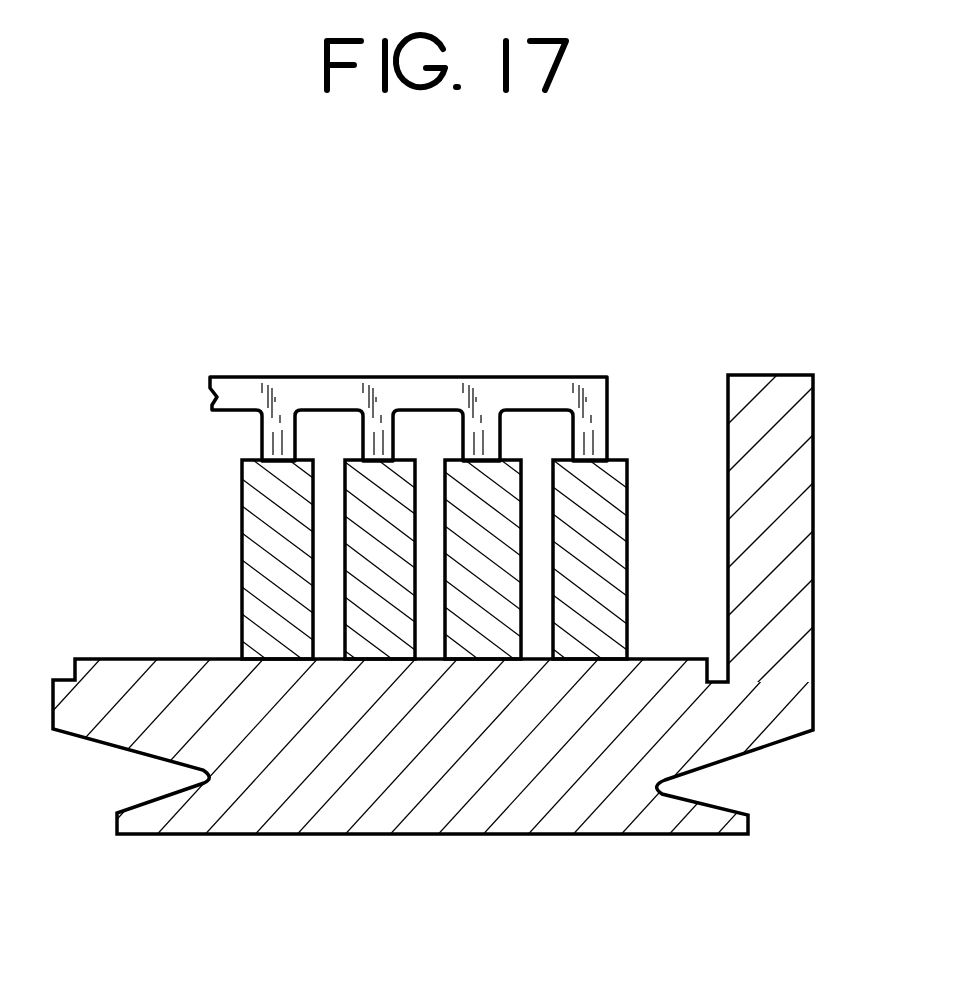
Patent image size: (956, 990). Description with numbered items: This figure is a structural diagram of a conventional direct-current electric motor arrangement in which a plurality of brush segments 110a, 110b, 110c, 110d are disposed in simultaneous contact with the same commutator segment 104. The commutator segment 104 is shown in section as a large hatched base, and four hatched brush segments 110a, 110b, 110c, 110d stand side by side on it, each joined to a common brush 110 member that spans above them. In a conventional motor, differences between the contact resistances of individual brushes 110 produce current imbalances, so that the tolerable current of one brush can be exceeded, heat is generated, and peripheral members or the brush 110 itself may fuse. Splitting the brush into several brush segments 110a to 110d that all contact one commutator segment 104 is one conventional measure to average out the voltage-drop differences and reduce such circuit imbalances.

The commutator segment 104 is at (465, 820).
The brush 110 is at (477, 357).
The brush segment 110a is at (627, 460).
The brush segment 110b is at (512, 460).
The brush segment 110c is at (408, 460).
The brush segment 110d is at (297, 460).